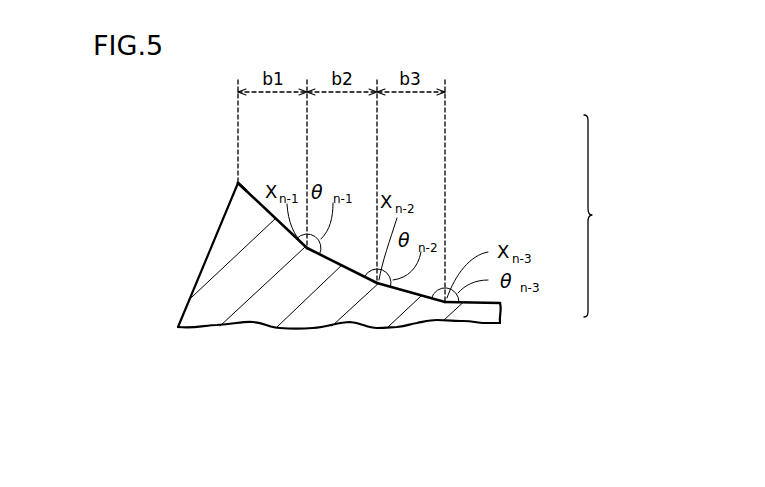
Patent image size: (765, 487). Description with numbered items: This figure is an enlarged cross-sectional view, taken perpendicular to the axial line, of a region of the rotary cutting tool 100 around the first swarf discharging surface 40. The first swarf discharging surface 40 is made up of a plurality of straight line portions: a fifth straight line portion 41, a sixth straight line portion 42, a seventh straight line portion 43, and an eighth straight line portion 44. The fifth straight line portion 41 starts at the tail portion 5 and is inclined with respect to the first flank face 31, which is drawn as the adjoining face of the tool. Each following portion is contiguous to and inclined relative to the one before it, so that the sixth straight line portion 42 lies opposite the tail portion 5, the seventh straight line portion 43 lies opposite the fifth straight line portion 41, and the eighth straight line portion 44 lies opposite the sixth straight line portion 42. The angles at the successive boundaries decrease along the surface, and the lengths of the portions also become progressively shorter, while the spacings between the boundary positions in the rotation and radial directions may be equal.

The tail portion 5 is at (236, 181).
The first flank face 31 is at (209, 248).
The first swarf discharging surface 40 is at (600, 216).
The fifth straight line portion 41 is at (253, 197).
The sixth straight line portion 42 is at (343, 265).
The seventh straight line portion 43 is at (414, 291).
The eighth straight line portion 44 is at (482, 298).
The rotary cutting tool 100 is at (267, 300).